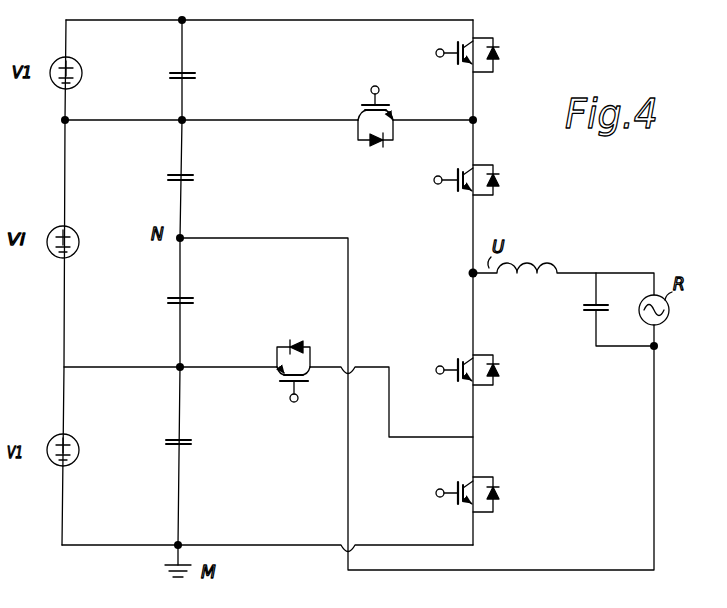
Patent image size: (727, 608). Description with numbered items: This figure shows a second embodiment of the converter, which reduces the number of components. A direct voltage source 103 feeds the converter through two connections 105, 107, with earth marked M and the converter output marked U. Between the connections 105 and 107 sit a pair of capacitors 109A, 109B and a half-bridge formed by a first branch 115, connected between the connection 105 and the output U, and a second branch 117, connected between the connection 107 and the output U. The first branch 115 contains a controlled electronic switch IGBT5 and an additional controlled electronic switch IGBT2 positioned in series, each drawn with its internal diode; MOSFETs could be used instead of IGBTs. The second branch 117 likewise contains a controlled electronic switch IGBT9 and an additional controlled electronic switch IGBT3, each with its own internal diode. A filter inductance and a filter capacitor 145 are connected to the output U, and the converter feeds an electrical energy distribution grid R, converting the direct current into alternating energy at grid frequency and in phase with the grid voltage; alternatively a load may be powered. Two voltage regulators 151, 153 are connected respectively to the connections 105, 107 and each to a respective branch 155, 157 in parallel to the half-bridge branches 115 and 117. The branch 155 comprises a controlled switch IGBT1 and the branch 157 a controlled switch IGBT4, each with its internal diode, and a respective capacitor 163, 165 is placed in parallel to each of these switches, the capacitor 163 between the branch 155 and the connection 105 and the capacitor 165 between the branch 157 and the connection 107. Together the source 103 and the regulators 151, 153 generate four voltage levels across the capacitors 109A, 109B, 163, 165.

The direct voltage source 103 is at (59, 262).
The connection 105 is at (189, 118).
The connection 107 is at (184, 370).
The capacitor 109A is at (190, 177).
The capacitor 109B is at (190, 299).
The first branch 115 is at (433, 118).
The second branch 117 is at (408, 436).
The filter capacitor 145 is at (588, 315).
The voltage regulator 151 is at (60, 94).
The voltage regulator 153 is at (55, 470).
The branch 155 is at (348, 23).
The branch 157 is at (243, 544).
The capacitor 163 is at (190, 72).
The capacitor 165 is at (190, 447).
The controlled switch IGBT1 is at (532, 70).
The additional controlled electronic switch IGBT2 is at (537, 198).
The additional controlled electronic switch IGBT3 is at (540, 388).
The controlled switch IGBT4 is at (545, 512).
The controlled electronic switch IGBT5 is at (357, 104).
The controlled electronic switch IGBT9 is at (332, 325).